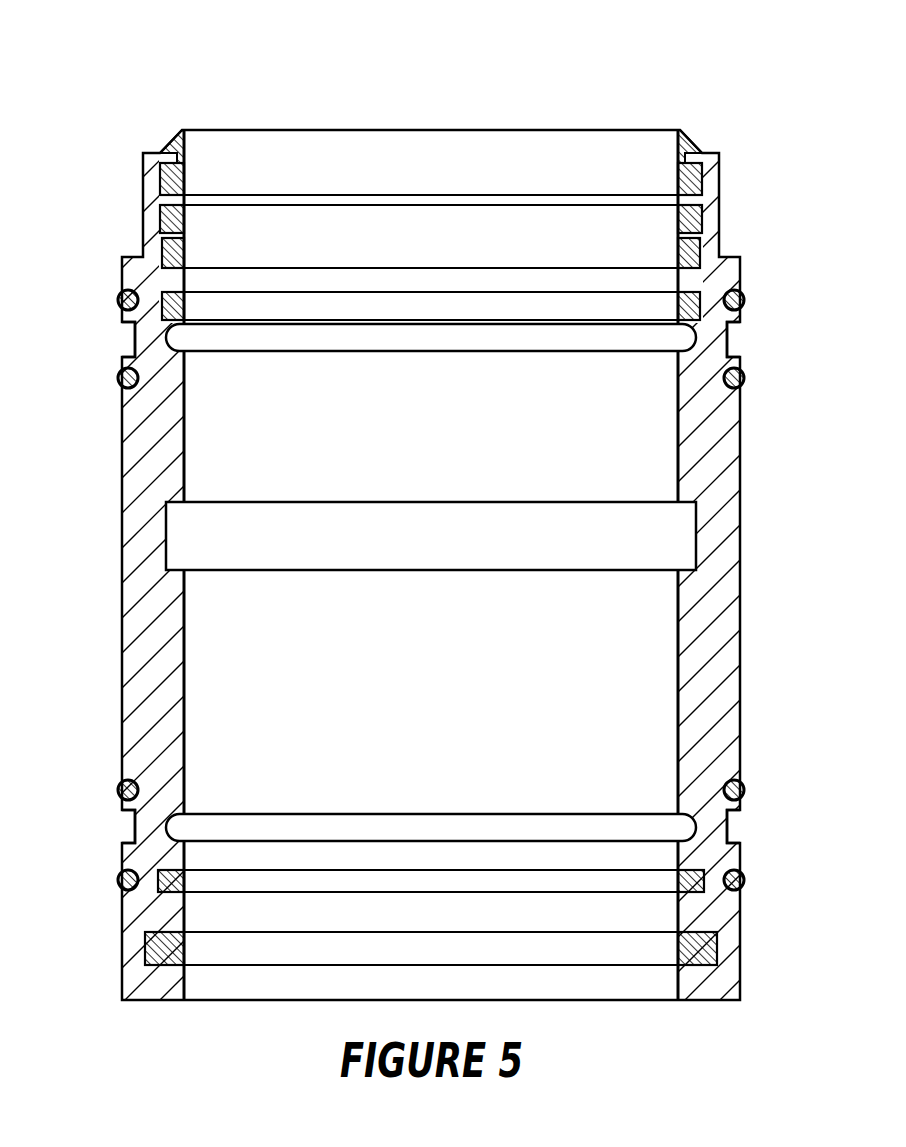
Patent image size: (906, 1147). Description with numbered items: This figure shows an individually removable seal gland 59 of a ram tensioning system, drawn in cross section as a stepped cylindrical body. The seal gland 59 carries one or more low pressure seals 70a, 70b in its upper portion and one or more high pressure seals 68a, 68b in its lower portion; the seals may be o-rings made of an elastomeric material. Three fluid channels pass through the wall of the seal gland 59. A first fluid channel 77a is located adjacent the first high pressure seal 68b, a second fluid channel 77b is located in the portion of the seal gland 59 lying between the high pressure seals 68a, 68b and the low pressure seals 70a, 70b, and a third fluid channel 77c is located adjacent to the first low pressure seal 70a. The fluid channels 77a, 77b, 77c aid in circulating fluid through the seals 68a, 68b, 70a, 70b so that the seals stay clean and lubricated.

The individually removable seal gland 59 is at (125, 76).
The low pressure seal 70b is at (716, 245).
The first low pressure seal 70a is at (702, 306).
The first high pressure seal 68b is at (703, 880).
The high pressure seal 68a is at (716, 950).
The third fluid channel 77c is at (137, 340).
The second fluid channel 77b is at (166, 530).
The first fluid channel 77a is at (135, 830).